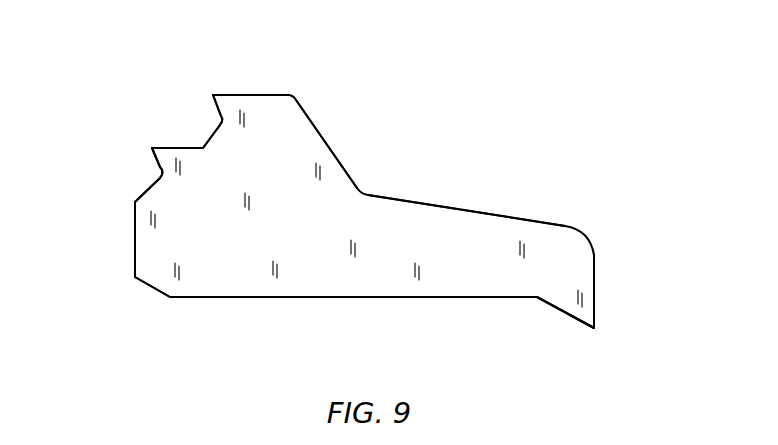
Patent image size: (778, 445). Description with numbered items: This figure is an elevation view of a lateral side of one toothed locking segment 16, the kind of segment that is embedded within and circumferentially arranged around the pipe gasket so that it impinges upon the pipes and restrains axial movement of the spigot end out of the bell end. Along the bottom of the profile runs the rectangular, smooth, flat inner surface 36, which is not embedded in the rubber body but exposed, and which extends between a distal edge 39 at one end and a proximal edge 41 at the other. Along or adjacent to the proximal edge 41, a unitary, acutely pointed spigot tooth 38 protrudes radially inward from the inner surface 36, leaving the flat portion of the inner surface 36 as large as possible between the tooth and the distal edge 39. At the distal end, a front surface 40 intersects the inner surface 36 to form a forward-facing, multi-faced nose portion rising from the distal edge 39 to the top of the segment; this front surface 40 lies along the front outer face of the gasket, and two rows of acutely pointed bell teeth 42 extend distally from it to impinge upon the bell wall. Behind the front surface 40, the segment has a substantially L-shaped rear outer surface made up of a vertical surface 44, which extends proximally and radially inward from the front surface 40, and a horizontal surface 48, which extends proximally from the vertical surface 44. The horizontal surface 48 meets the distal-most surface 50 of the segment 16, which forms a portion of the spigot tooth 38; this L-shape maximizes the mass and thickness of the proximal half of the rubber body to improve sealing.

The locking segment 16 is at (440, 108).
The inner surface 36 is at (237, 298).
The spigot tooth 38 is at (572, 322).
The distal edge 39 is at (170, 298).
The front surface 40 is at (258, 95).
The proximal edge 41 is at (594, 328).
The bell teeth 42 is at (213, 95).
The vertical surface 44 is at (333, 153).
The horizontal surface 48 is at (435, 205).
The distal-most surface 50 is at (597, 278).